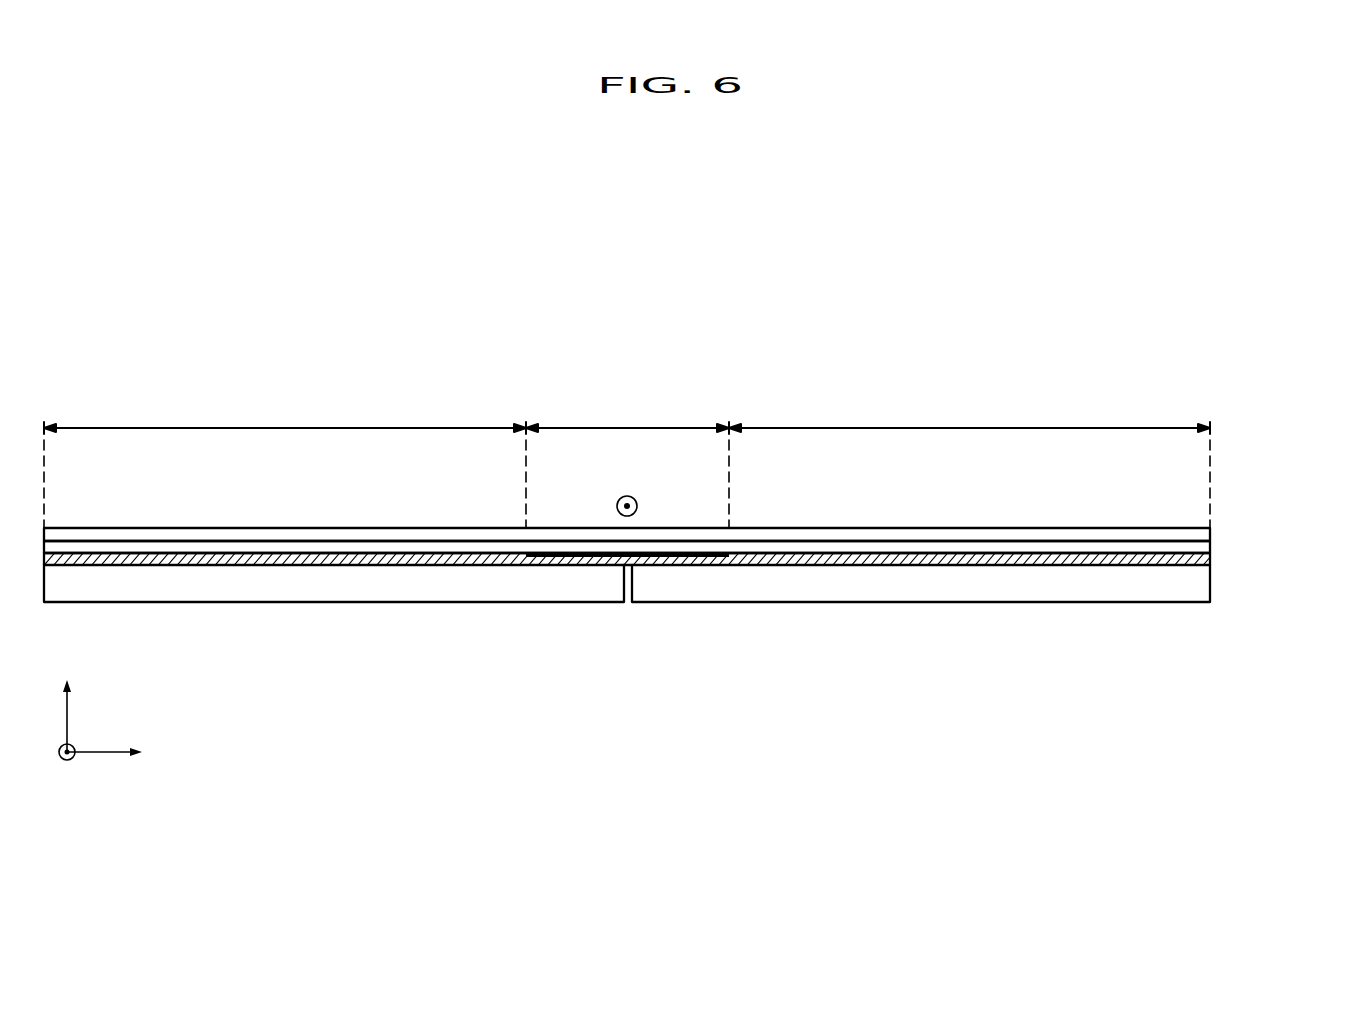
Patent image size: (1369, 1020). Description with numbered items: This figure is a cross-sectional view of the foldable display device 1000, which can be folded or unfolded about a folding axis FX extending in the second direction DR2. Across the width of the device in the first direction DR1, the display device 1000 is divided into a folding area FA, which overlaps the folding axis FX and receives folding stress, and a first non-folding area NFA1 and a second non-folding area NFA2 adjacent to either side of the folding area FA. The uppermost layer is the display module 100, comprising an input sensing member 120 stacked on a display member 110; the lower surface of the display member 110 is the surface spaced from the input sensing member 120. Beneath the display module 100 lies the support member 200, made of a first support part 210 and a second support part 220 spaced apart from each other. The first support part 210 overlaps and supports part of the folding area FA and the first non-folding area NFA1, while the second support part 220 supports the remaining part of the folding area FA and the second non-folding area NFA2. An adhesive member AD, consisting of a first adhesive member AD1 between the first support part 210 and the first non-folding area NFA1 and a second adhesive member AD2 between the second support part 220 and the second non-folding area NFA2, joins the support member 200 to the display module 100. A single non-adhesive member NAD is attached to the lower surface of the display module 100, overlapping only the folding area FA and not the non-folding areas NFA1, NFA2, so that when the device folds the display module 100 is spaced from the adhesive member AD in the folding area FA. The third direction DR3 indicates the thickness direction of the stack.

The display device 1000 is at (698, 558).
The display module 100 is at (703, 535).
The input sensing member 120 is at (1198, 534).
The display member 110 is at (1198, 546).
The support member 200 is at (624, 685).
The second support part 220 is at (597, 590).
The first support part 210 is at (655, 590).
The non-adhesive member NAD is at (562, 565).
The adhesive member AD is at (624, 685).
The first adhesive member AD1 is at (777, 666).
The second adhesive member AD2 is at (465, 565).
The first non-folding area NFA1 is at (939, 411).
The second non-folding area NFA2 is at (295, 411).
The folding area FA is at (625, 411).
The folding axis FX is at (626, 492).
The first direction DR1 is at (128, 753).
The second direction DR2 is at (70, 769).
The third direction DR3 is at (70, 701).